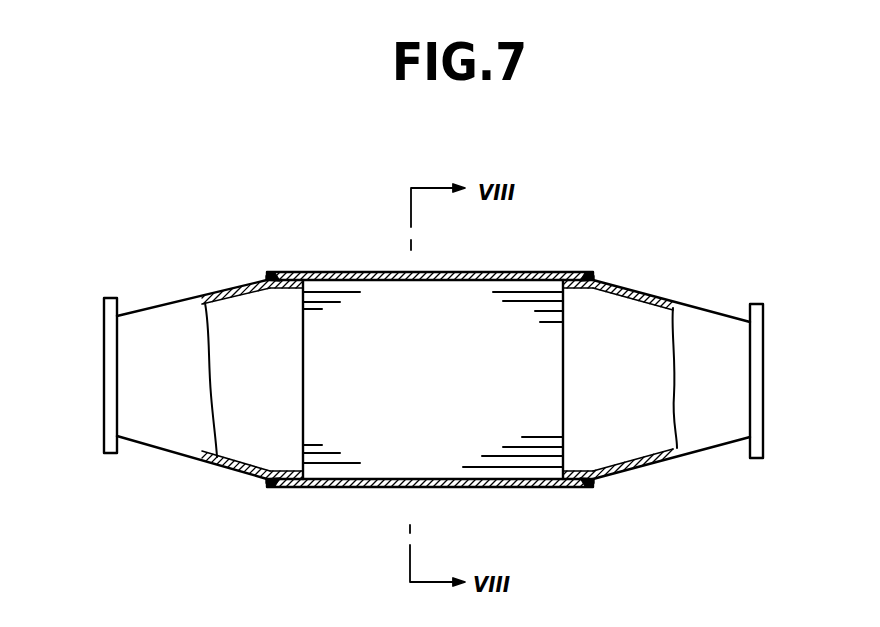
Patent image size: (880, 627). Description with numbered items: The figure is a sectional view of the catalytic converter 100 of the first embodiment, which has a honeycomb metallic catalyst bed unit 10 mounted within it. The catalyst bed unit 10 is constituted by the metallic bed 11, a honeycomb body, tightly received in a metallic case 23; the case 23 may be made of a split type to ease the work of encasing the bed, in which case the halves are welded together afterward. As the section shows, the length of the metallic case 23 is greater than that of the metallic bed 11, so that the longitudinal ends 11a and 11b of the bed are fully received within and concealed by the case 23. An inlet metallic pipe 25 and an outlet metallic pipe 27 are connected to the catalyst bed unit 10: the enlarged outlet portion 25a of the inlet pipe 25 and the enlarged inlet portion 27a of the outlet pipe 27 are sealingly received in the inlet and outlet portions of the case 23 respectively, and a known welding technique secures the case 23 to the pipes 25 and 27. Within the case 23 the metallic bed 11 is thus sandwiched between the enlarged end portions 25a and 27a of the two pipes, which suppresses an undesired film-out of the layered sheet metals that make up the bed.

The catalytic converter 100 is at (683, 172).
The honeycomb metallic catalyst bed unit 10 is at (488, 490).
The metallic bed 11 is at (403, 435).
The longitudinal end of the metallic bed 11a is at (303, 328).
The longitudinal end of the metallic bed 11b is at (563, 350).
The metallic case 23 is at (438, 272).
The inlet metallic pipe 25 is at (180, 452).
The enlarged outlet portion of the inlet pipe 25a is at (303, 365).
The outlet metallic pipe 27 is at (633, 467).
The enlarged inlet portion of the outlet pipe 27a is at (563, 383).